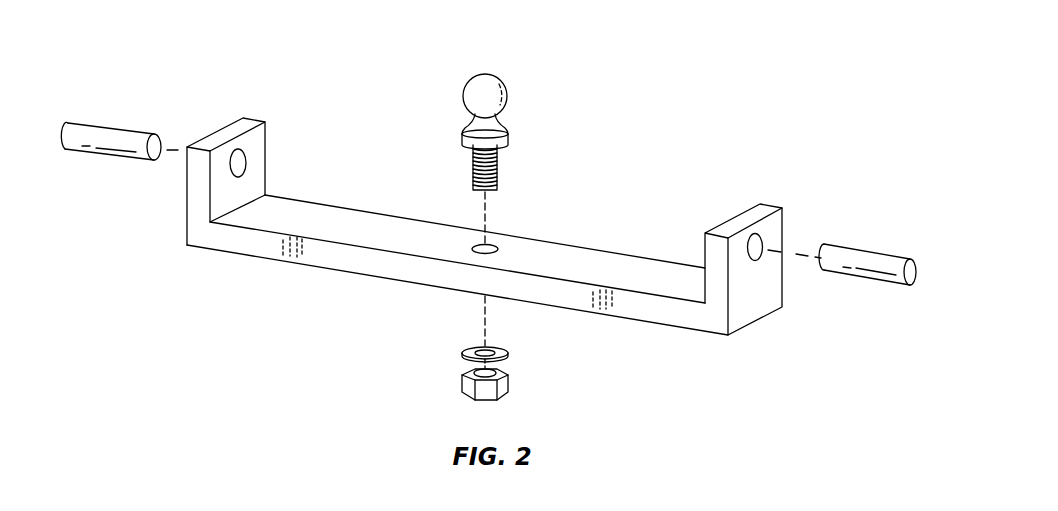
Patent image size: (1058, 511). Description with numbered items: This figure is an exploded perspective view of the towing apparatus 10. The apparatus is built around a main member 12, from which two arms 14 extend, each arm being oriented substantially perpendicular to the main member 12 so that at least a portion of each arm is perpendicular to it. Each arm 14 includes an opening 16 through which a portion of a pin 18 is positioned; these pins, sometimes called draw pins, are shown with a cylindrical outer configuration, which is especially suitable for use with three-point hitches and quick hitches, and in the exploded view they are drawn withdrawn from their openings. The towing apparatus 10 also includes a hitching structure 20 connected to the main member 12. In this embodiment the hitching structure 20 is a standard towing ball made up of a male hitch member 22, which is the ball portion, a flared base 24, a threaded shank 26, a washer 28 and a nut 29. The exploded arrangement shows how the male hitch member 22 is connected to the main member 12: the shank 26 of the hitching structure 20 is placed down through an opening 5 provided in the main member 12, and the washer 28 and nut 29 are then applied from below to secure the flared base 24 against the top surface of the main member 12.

The towing apparatus 10 is at (693, 167).
The main member 12 is at (315, 220).
The arms 14 is at (200, 200).
The opening 16 is at (247, 162).
The pin 18 is at (108, 137).
The opening 5 is at (492, 243).
The hitching structure 20 is at (500, 66).
The male hitch member 22 is at (462, 97).
The flared base 24 is at (505, 127).
The threaded shank 26 is at (473, 165).
The washer 28 is at (462, 353).
The nut 29 is at (463, 382).